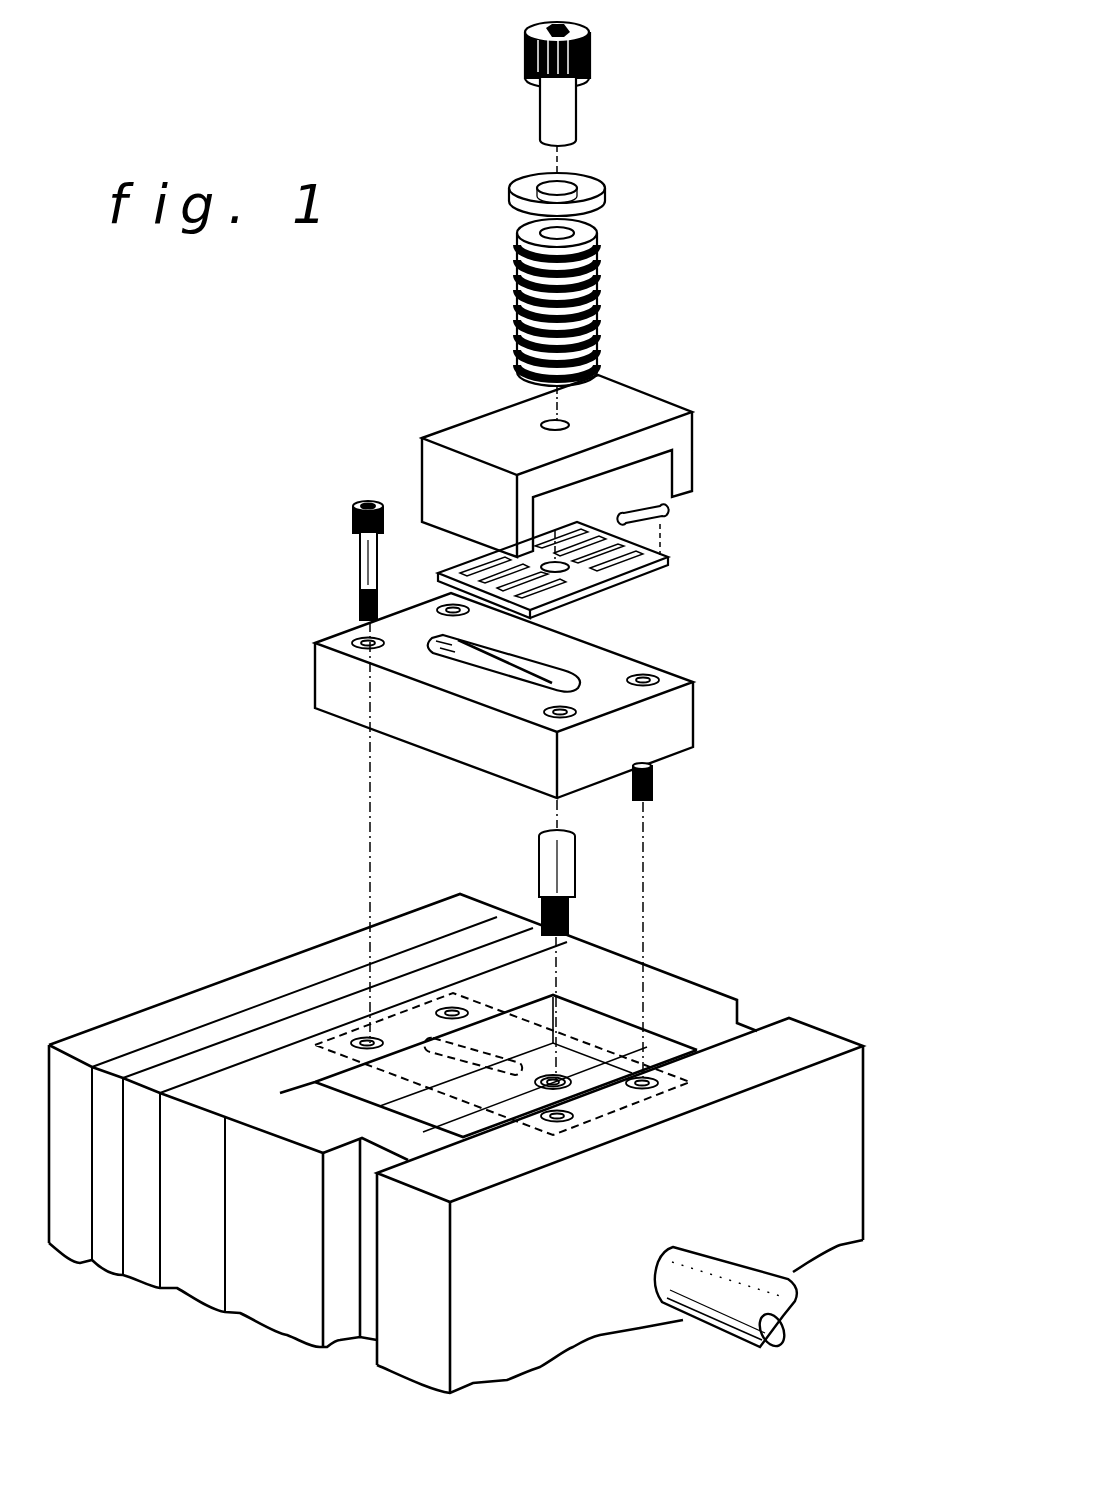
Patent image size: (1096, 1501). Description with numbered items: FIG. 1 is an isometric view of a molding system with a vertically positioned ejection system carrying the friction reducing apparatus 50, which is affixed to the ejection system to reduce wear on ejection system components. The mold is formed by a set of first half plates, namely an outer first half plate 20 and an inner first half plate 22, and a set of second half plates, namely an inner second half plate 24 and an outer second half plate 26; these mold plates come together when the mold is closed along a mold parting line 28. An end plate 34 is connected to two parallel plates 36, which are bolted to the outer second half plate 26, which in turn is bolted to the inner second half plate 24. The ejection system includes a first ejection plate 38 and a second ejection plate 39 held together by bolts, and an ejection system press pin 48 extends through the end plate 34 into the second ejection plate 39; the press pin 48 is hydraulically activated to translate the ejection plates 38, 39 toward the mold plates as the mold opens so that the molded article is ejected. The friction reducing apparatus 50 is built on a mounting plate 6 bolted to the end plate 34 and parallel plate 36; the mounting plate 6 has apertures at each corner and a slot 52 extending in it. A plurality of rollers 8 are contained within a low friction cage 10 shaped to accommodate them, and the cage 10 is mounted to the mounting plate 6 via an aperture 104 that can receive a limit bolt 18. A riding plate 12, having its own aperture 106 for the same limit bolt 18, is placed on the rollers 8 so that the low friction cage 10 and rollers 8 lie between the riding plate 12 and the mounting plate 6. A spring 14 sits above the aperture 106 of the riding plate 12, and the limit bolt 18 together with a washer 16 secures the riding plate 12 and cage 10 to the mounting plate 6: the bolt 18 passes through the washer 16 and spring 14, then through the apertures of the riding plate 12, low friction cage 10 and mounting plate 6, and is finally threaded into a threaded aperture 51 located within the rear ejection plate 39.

The friction reducing apparatus 50 is at (407, 313).
The limit bolt 18 is at (578, 118).
The washer 16 is at (606, 196).
The spring 14 is at (598, 322).
The riding plate 12 is at (632, 465).
The aperture 106 is at (540, 424).
The rollers 8 is at (664, 512).
The low friction cage 10 is at (617, 571).
The aperture 104 is at (586, 565).
The slot 52 is at (565, 672).
The mounting plate 6 is at (562, 695).
The outer first half plate 20 is at (87, 1037).
The inner first half plate 22 is at (203, 1033).
The inner second half plate 24 is at (297, 1033).
The mold parting line 28 is at (250, 1033).
The outer second half plate 26 is at (503, 977).
The end plate 34 is at (789, 1050).
The parallel plates 36 is at (693, 1008).
The first ejection plate 38 is at (597, 1037).
The second ejection plate 39 is at (657, 1020).
The threaded aperture 51 is at (572, 1085).
The ejection system press pin 48 is at (712, 1253).